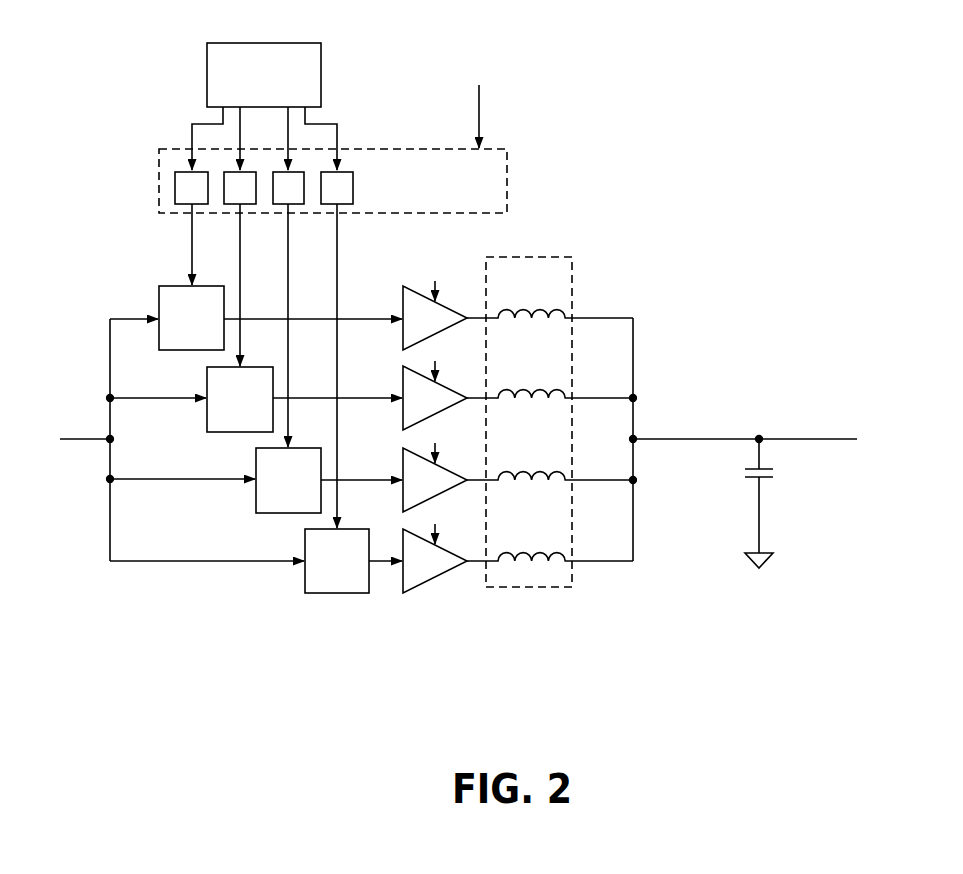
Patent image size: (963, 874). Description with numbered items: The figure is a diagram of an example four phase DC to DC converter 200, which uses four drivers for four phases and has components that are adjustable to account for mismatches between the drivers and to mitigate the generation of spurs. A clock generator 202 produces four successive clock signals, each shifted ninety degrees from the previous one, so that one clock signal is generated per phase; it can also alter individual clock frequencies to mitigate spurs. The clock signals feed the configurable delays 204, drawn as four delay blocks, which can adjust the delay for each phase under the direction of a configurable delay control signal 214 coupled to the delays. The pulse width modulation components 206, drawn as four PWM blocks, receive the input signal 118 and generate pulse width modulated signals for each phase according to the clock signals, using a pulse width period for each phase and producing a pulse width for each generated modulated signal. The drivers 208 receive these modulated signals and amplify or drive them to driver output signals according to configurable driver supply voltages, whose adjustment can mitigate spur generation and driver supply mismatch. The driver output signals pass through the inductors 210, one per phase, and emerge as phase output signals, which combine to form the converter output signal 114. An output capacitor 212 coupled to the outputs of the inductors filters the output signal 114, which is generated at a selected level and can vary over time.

The four phase DC to DC converter 200 is at (178, 693).
The clock generator 202 is at (227, 42).
The configurable delays 204 is at (163, 149).
The pulse width modulation components 206 is at (147, 276).
The drivers 208 is at (453, 267).
The inductors 210 is at (531, 257).
The configurable delay control signal 214 is at (478, 140).
The output signal 114 is at (835, 439).
The input signal 118 is at (85, 441).
The output capacitor 212 is at (784, 498).